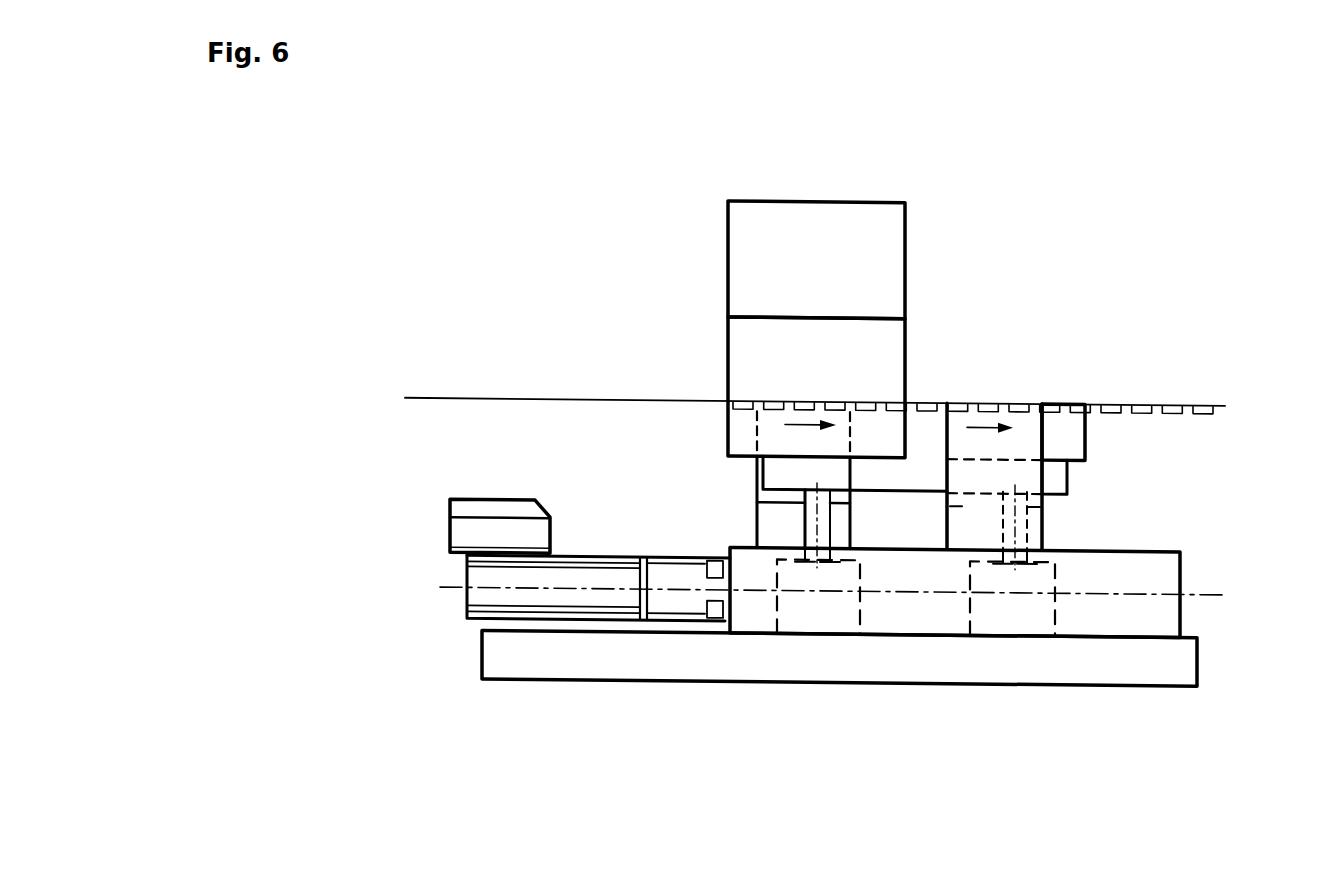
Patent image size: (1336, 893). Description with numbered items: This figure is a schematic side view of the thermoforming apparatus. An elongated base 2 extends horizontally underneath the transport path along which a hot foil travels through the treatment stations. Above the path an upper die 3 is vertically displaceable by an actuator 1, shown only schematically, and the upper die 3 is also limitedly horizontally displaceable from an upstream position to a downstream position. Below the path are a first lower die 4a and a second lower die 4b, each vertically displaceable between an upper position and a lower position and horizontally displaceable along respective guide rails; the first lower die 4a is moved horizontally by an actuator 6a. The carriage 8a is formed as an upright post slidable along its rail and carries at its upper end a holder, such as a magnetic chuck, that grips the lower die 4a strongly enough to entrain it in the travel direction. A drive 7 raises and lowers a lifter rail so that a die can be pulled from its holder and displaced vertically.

The actuator 1 is at (800, 232).
The elongated base 2 is at (1158, 668).
The upper die 3 is at (895, 352).
The first lower die 4a is at (887, 427).
The second lower die 4b is at (1062, 437).
The actuator 6a is at (450, 503).
The actuator or drive 7 is at (905, 465).
The carriage 8a is at (1032, 510).